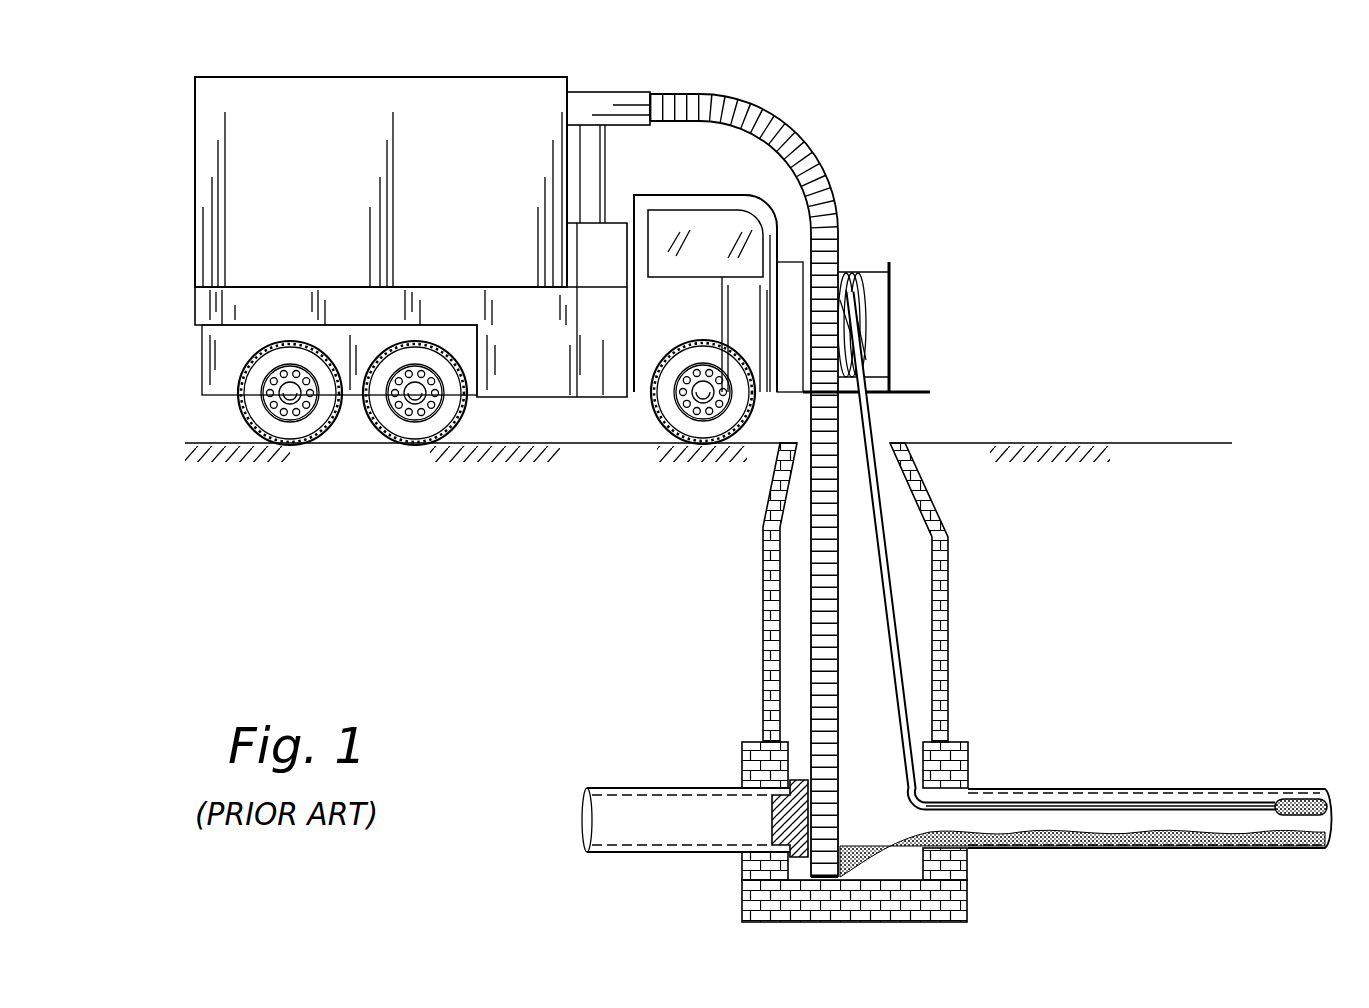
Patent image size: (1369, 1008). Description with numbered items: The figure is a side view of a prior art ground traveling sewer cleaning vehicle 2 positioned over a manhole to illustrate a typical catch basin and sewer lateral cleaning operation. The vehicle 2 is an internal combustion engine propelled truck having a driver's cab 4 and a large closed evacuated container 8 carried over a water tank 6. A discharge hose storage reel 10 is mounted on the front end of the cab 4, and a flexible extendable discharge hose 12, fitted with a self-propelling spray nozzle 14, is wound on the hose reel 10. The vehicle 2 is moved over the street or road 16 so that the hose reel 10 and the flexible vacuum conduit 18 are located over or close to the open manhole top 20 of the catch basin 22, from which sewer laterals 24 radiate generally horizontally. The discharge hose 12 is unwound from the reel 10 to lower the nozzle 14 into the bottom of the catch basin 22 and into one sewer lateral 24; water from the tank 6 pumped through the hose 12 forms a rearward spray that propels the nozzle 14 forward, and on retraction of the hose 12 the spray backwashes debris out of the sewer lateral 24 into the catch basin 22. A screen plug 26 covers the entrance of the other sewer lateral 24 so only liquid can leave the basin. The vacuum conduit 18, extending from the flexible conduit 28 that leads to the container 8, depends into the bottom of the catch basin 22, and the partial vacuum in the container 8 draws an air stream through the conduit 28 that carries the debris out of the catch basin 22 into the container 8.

The ground traveling sewer cleaning vehicle 2 is at (878, 143).
The driver's cab 4 is at (712, 200).
The water tank 6 is at (526, 300).
The closed evacuated container 8 is at (265, 152).
The discharge hose storage reel 10 is at (923, 321).
The flexible extendable discharge hose 12 is at (865, 318).
The self-propelling spray nozzle 14 is at (1300, 800).
The street or road 16 is at (1105, 443).
The flexible vacuum conduit 18 is at (872, 682).
The open manhole top 20 is at (883, 443).
The catch basin 22 is at (915, 612).
The sewer lateral 24 is at (660, 852).
The screen plug 26 is at (772, 830).
The flexible conduit 28 is at (830, 243).